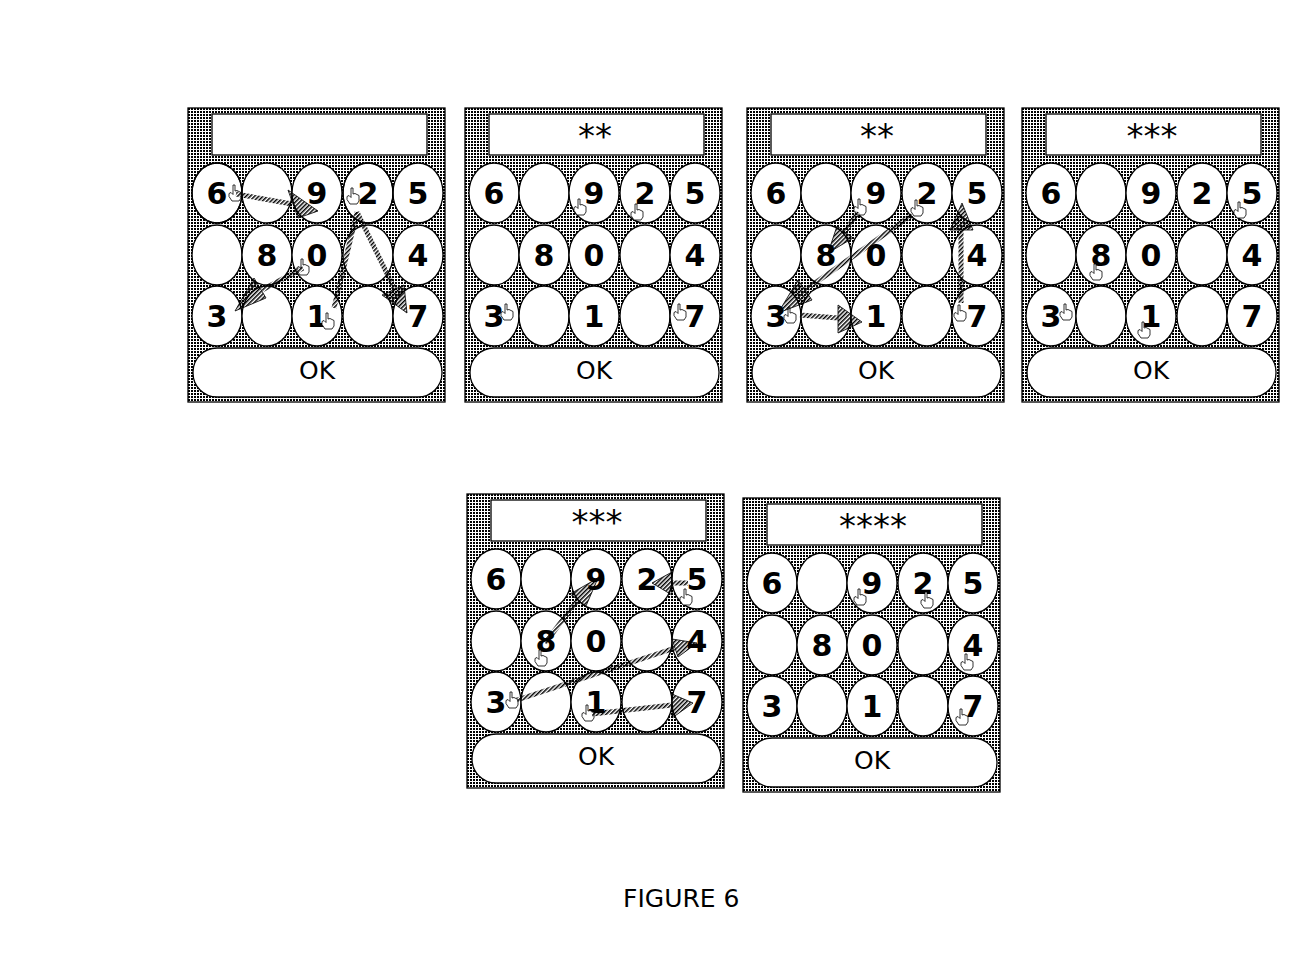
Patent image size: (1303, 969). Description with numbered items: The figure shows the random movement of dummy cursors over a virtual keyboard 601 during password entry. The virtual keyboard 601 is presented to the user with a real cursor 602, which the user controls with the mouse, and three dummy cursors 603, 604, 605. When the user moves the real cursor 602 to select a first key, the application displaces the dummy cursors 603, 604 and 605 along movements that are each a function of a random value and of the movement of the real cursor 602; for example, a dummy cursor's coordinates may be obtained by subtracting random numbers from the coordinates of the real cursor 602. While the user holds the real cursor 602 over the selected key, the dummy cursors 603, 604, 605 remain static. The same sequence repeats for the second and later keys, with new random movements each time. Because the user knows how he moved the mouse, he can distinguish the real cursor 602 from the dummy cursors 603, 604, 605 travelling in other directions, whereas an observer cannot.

The virtual keyboard 601 is at (188, 160).
The real cursor 602 is at (337, 335).
The dummy cursor 603 is at (213, 185).
The dummy cursor 604 is at (308, 273).
The dummy cursor 605 is at (362, 182).